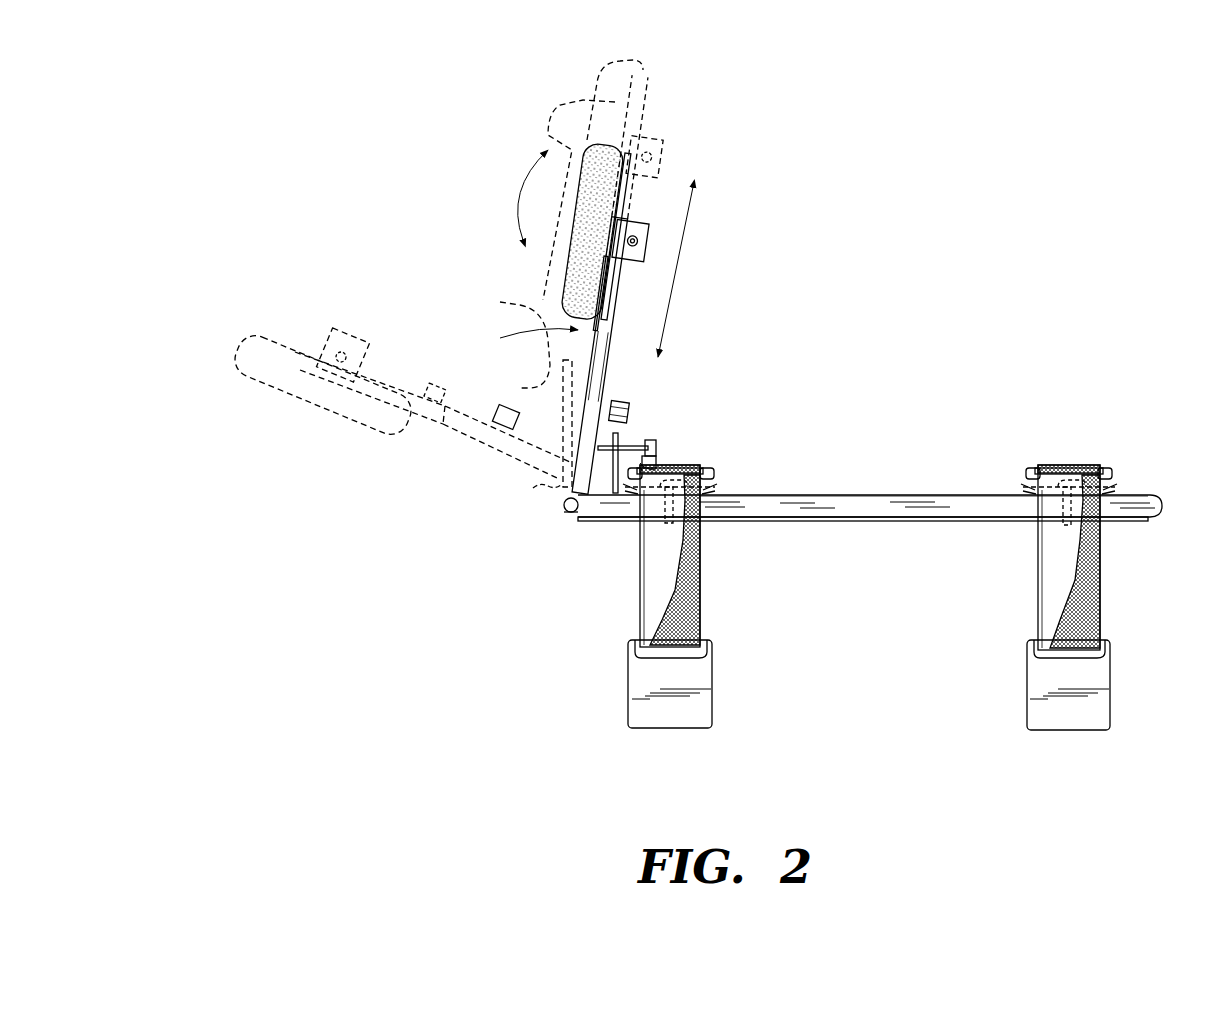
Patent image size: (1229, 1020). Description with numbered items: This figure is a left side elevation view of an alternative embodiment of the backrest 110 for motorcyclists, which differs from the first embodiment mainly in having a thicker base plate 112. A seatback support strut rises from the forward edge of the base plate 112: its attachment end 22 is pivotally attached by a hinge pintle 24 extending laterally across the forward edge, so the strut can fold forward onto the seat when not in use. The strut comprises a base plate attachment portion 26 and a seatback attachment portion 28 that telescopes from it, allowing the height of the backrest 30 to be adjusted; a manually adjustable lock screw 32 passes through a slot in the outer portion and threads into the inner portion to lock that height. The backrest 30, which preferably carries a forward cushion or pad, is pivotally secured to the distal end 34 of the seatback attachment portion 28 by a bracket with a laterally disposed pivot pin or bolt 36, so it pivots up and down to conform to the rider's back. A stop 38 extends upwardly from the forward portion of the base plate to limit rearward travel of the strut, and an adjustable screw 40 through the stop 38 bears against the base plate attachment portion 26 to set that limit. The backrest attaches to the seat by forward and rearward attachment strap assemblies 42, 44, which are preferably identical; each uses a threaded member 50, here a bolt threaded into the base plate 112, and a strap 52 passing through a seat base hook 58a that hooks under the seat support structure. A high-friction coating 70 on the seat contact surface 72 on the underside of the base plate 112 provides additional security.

The backrest 110 is at (348, 660).
The attachment end 22 is at (560, 491).
The hinge pintle 24 is at (563, 515).
The base plate attachment portion 26 is at (455, 380).
The seatback attachment portion 28 is at (647, 192).
The backrest 30 is at (355, 490).
The lock screw 32 is at (637, 408).
The distal end 34 is at (633, 275).
The pivot pin or bolt 36 is at (630, 243).
The stop 38 is at (625, 447).
The adjustable screw 40 is at (648, 446).
The forward attachment strap assembly 42 is at (740, 465).
The rearward attachment strap assembly 44 is at (1135, 463).
The threaded member 50 is at (703, 550).
The strap 52 is at (704, 597).
The first seat base hook 58a is at (712, 689).
The coating 70 is at (826, 518).
The seat contact surface 72 is at (918, 521).
The base plate 112 is at (885, 495).